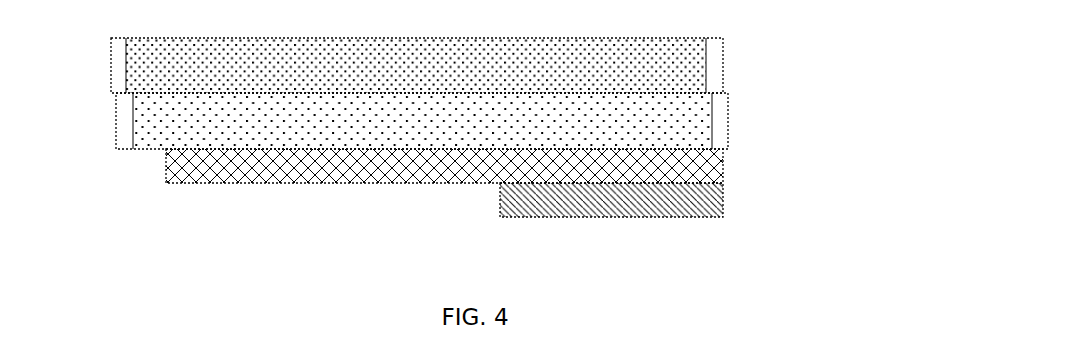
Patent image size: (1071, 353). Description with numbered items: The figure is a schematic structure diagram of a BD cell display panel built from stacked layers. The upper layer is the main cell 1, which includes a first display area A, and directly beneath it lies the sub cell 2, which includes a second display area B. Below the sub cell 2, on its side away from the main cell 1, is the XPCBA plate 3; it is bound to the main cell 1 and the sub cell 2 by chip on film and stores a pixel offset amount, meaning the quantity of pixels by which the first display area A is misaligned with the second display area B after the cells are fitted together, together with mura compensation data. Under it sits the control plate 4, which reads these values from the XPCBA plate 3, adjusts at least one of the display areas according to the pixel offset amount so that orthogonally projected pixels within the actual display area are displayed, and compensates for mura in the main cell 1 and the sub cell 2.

The main cell 1 is at (724, 62).
The sub cell 2 is at (729, 118).
The XPCBA plate 3 is at (724, 164).
The control plate 4 is at (724, 211).